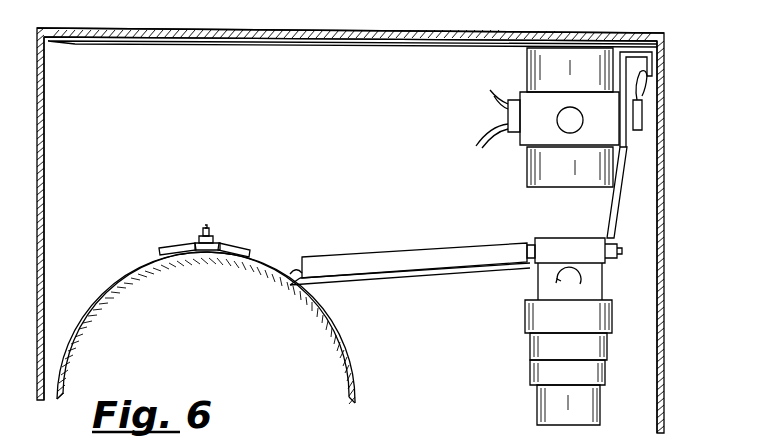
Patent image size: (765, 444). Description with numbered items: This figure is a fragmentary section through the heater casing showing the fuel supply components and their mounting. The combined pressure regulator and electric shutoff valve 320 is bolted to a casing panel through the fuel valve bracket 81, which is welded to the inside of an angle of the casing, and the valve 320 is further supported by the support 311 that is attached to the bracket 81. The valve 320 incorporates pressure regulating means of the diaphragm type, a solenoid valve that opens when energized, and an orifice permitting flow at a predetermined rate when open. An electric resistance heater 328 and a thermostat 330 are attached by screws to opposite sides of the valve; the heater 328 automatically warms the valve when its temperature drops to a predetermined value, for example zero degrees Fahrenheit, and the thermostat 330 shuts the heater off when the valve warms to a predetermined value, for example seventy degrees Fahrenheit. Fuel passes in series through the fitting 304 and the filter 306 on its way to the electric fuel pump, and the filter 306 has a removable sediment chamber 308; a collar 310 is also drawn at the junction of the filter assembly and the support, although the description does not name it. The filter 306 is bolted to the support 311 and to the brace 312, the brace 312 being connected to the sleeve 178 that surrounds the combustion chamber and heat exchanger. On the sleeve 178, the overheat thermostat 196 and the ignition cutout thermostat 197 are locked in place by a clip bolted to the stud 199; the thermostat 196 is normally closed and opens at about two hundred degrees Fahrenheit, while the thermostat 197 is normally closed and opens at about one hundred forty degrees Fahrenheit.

The fuel valve bracket 81 is at (622, 67).
The sleeve 178 is at (340, 336).
The overheat thermostat 196 is at (184, 246).
The ignition cutout thermostat 197 is at (246, 250).
The stud 199 is at (208, 233).
The fitting 304 is at (545, 288).
The filter 306 is at (530, 322).
The sediment chamber 308 is at (540, 375).
The collar 310 is at (532, 238).
The support 311 is at (608, 214).
The brace 312 is at (462, 276).
The combined pressure regulator and electric shutoff valve 320 is at (540, 131).
The electric resistance heater 328 is at (508, 115).
The thermostat 330 is at (645, 108).